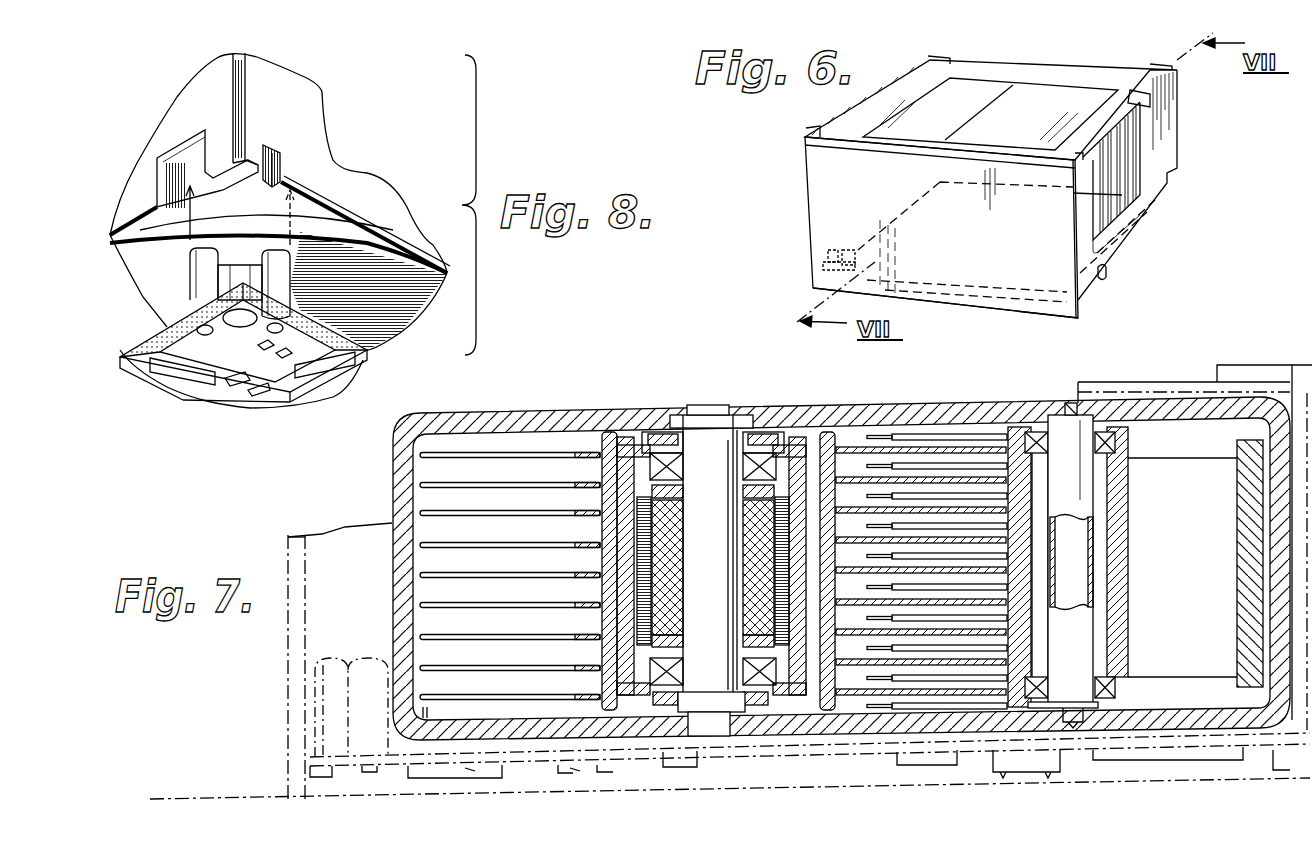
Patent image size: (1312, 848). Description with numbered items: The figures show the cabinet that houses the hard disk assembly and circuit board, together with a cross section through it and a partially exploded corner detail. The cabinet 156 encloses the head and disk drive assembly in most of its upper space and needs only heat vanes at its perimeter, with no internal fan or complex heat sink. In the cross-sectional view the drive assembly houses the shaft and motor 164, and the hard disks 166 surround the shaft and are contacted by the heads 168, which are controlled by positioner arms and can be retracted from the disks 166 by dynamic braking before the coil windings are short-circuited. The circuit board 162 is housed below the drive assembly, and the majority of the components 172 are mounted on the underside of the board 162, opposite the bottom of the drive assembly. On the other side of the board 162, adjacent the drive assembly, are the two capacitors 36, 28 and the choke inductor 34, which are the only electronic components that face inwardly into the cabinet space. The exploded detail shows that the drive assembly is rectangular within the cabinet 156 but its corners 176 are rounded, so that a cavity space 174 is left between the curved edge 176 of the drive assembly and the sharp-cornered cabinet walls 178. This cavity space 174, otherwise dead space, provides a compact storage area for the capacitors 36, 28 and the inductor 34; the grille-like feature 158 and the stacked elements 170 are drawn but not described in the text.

In FIG. 8, the capacitor 28 is at (277, 273).
In FIG. 6, the capacitor 28 is at (848, 250).
In FIG. 8, the inductor 34 is at (248, 244).
In FIG. 6, the inductor 34 is at (830, 266).
In FIG. 8, the capacitor 36 is at (200, 288).
In FIG. 6, the capacitor 36 is at (833, 250).
In FIG. 6, the cabinet 156 is at (824, 163).
In FIG. 6, the ventilation grille 158 is at (1122, 168).
In FIG. 8, the circuit board 162 is at (367, 345).
In FIG. 6, the circuit board 162 is at (1012, 258).
In FIG. 7, the circuit board 162 is at (305, 763).
In FIG. 7, the shaft and motor 164 is at (713, 483).
In FIG. 7, the hard disks 166 is at (420, 606).
In FIG. 7, the heads 168 is at (830, 578).
In FIG. 7, the disks 170 is at (935, 580).
In FIG. 8, the components 172 is at (233, 383).
In FIG. 7, the components 172 is at (573, 768).
In FIG. 8, the cavity space 174 is at (202, 197).
In FIG. 8, the rounded corners 176 is at (335, 228).
In FIG. 8, the cabinet walls 178 is at (260, 83).